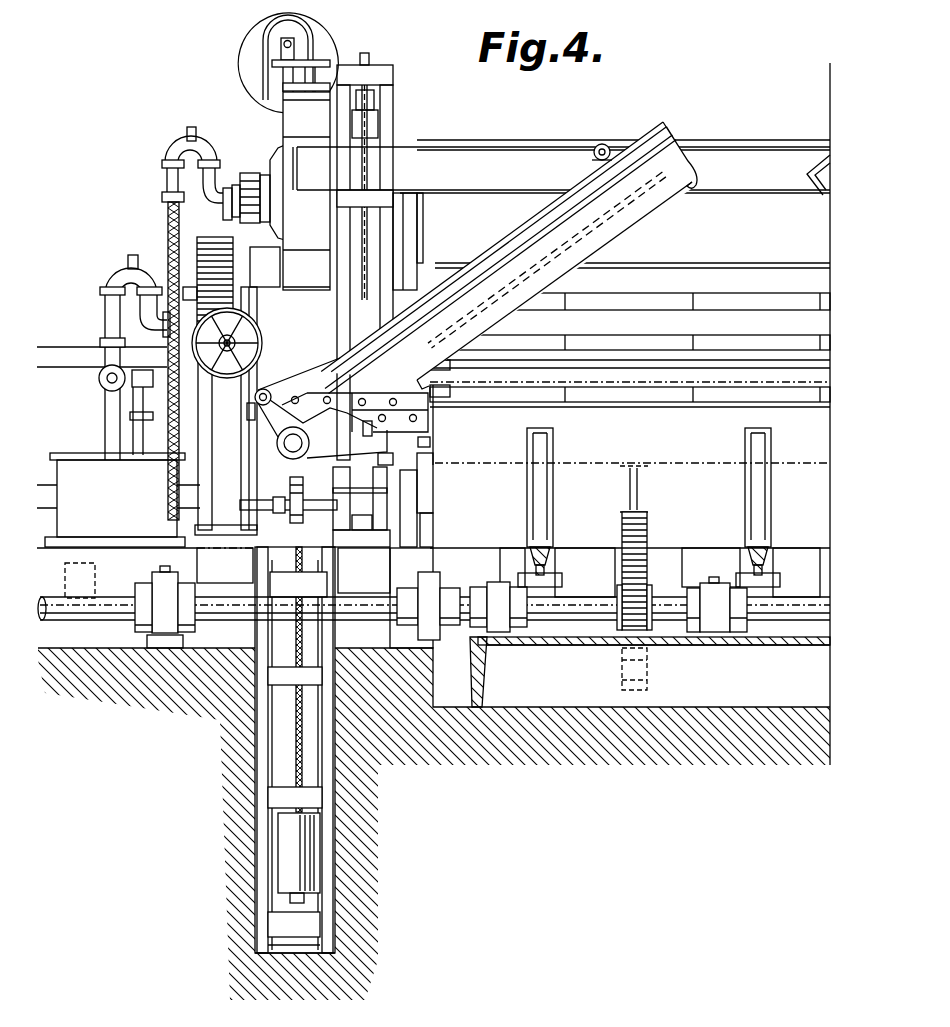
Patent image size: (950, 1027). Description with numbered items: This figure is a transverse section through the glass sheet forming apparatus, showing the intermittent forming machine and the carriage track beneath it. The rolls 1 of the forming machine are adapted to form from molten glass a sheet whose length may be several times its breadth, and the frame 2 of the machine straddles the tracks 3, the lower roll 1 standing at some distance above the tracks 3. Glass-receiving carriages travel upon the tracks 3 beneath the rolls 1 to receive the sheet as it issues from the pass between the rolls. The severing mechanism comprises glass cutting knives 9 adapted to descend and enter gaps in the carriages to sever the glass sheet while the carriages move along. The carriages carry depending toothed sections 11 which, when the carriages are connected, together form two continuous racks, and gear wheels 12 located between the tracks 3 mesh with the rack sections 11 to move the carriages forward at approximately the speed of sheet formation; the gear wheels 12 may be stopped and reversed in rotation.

The rolls 1 is at (742, 204).
The frame 2 is at (273, 297).
The tracks 3 is at (547, 549).
The glass cutting knives 9 is at (644, 210).
The toothed section 11 is at (657, 517).
The gear wheels 12 is at (657, 547).